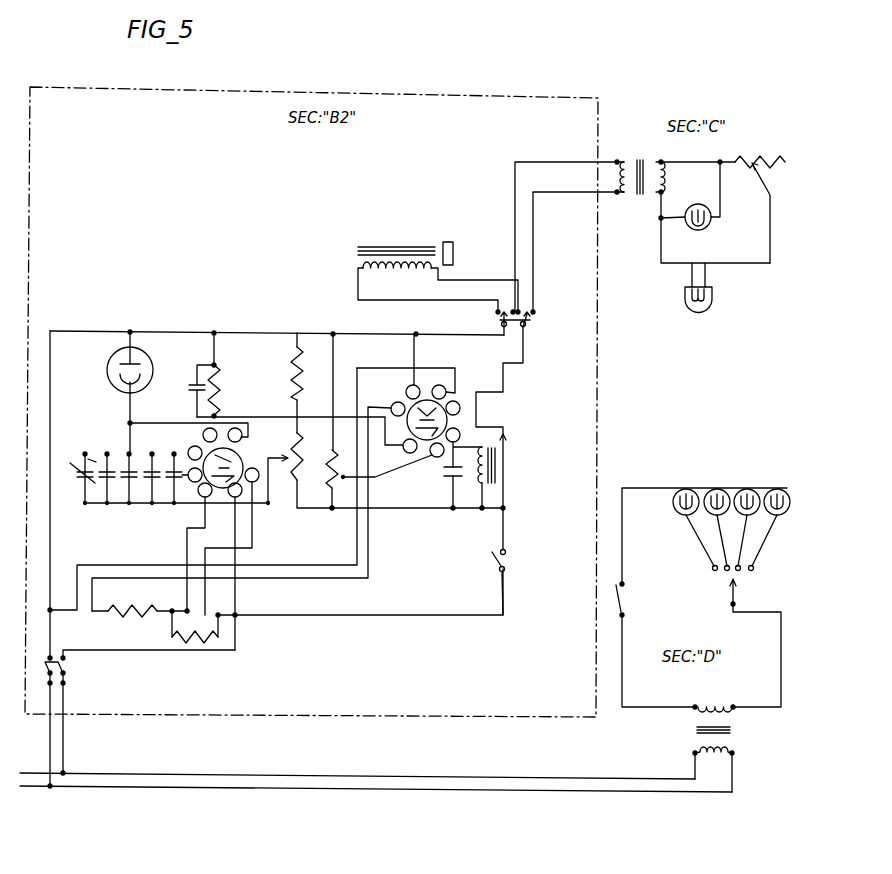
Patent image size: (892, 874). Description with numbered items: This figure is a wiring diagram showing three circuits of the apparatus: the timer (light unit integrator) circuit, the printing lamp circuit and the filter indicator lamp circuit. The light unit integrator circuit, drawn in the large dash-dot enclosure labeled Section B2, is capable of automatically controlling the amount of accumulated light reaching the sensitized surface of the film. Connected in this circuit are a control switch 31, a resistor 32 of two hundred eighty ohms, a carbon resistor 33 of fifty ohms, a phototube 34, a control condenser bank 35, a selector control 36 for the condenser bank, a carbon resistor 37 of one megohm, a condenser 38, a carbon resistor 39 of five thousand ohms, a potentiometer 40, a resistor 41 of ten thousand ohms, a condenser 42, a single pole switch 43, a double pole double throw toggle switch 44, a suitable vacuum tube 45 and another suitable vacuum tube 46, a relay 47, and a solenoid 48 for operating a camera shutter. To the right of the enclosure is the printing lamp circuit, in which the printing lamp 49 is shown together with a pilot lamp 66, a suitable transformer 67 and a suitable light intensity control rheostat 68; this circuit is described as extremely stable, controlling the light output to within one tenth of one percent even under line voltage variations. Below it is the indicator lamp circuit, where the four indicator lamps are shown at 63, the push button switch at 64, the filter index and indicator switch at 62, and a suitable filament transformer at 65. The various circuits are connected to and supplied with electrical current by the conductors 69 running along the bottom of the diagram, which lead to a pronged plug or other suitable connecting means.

The control switch 31 is at (70, 677).
The resistor 32 is at (144, 616).
The carbon resistor 33 is at (203, 645).
The phototube 34 is at (109, 356).
The control condenser bank 35 is at (77, 485).
The selector control for the condenser bank 36 is at (125, 443).
The carbon resistor 37 is at (222, 387).
The condenser 38 is at (194, 396).
The carbon resistor 39 is at (293, 368).
The potentiometer 40 is at (294, 482).
The resistor 41 is at (333, 492).
The condenser 42 is at (448, 475).
The single pole switch 43 is at (491, 561).
The double pole double throw toggle switch 44 is at (533, 325).
The vacuum tube 45 is at (243, 460).
The vacuum tube 46 is at (425, 400).
The relay 47 is at (505, 433).
The solenoid 48 is at (355, 258).
The printing lamp 49 is at (706, 310).
The filter index and indicator switch 62 is at (724, 585).
The indicator lamps 63 is at (767, 489).
The push button switch 64 is at (628, 603).
The filament transformer 65 is at (693, 731).
The pilot lamp 66 is at (710, 226).
The transformer 67 is at (636, 195).
The light intensity control rheostat 68 is at (758, 161).
The conductors 69 is at (373, 792).